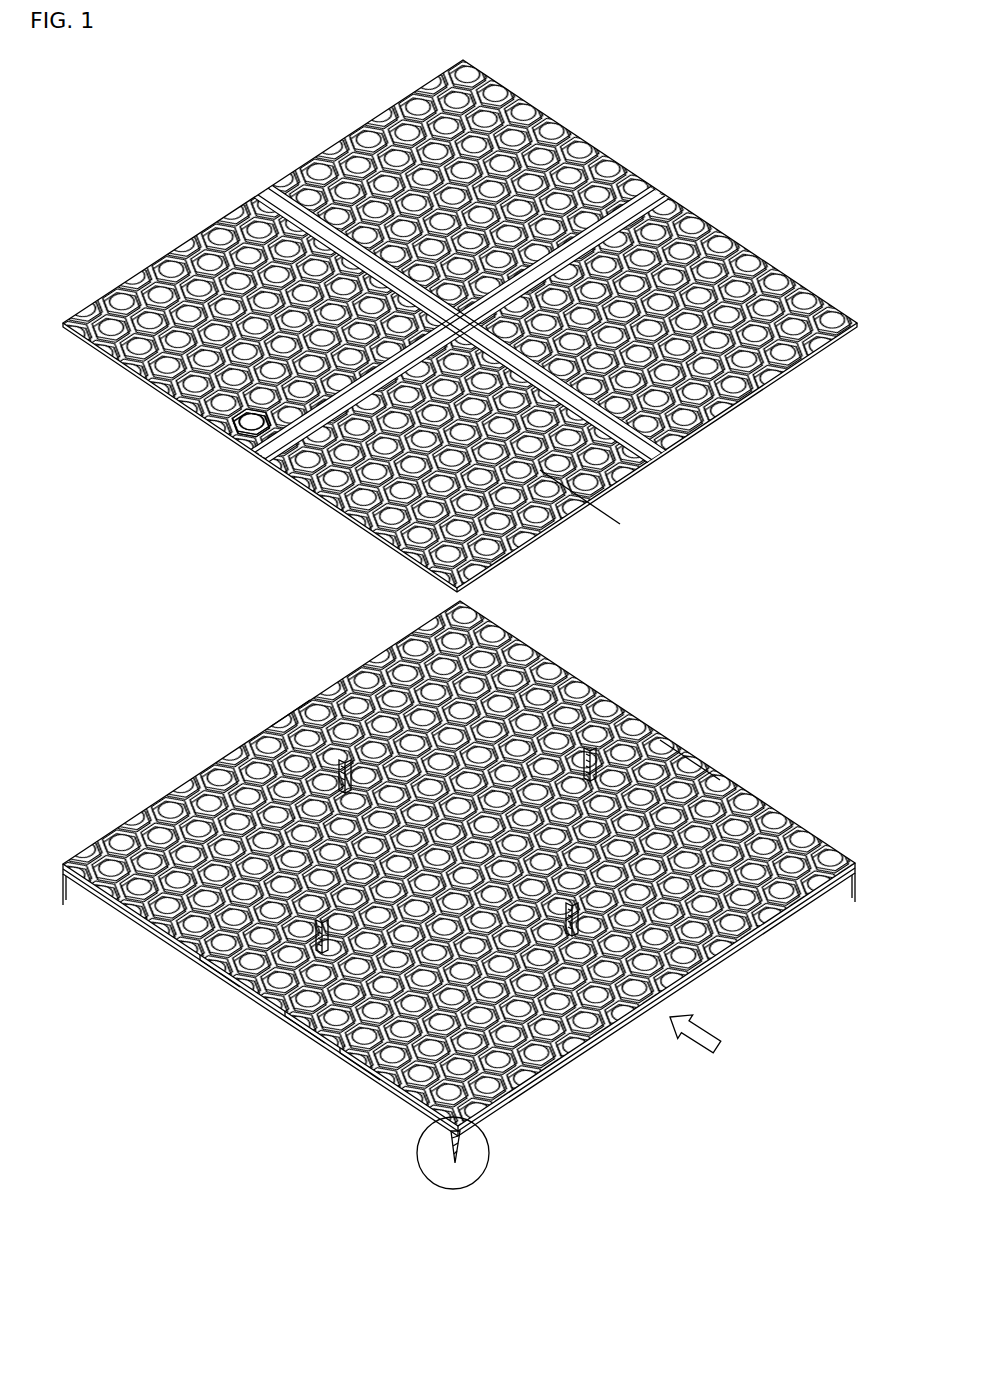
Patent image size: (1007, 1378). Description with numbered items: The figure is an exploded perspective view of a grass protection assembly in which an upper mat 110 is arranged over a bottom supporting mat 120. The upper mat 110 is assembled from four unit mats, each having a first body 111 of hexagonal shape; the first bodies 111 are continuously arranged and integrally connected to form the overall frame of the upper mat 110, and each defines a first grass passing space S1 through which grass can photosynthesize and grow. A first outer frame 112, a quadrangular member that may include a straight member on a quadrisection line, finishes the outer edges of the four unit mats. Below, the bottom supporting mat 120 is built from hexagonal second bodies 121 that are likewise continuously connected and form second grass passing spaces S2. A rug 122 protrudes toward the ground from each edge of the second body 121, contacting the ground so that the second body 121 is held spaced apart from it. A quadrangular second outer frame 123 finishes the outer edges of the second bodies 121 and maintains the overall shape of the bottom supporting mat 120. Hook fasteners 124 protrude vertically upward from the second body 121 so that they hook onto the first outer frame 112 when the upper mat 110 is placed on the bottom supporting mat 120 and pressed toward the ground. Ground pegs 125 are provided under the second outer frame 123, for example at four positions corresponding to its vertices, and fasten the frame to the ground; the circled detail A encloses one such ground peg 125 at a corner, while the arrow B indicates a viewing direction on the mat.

The upper mat 110 is at (212, 206).
The first body 111 is at (226, 436).
The first outer frame 112 is at (326, 506).
The first grass passing space S1 is at (581, 500).
The bottom supporting mat 120 is at (216, 762).
The second body 121 is at (218, 976).
The rug 122 is at (303, 1028).
The second outer frame 123 is at (358, 1076).
The hook fastener 124 is at (288, 707).
The ground peg 125 is at (837, 897).
The second grass passing space S2 is at (690, 770).
The detail region A is at (492, 1128).
The direction B is at (712, 1050).